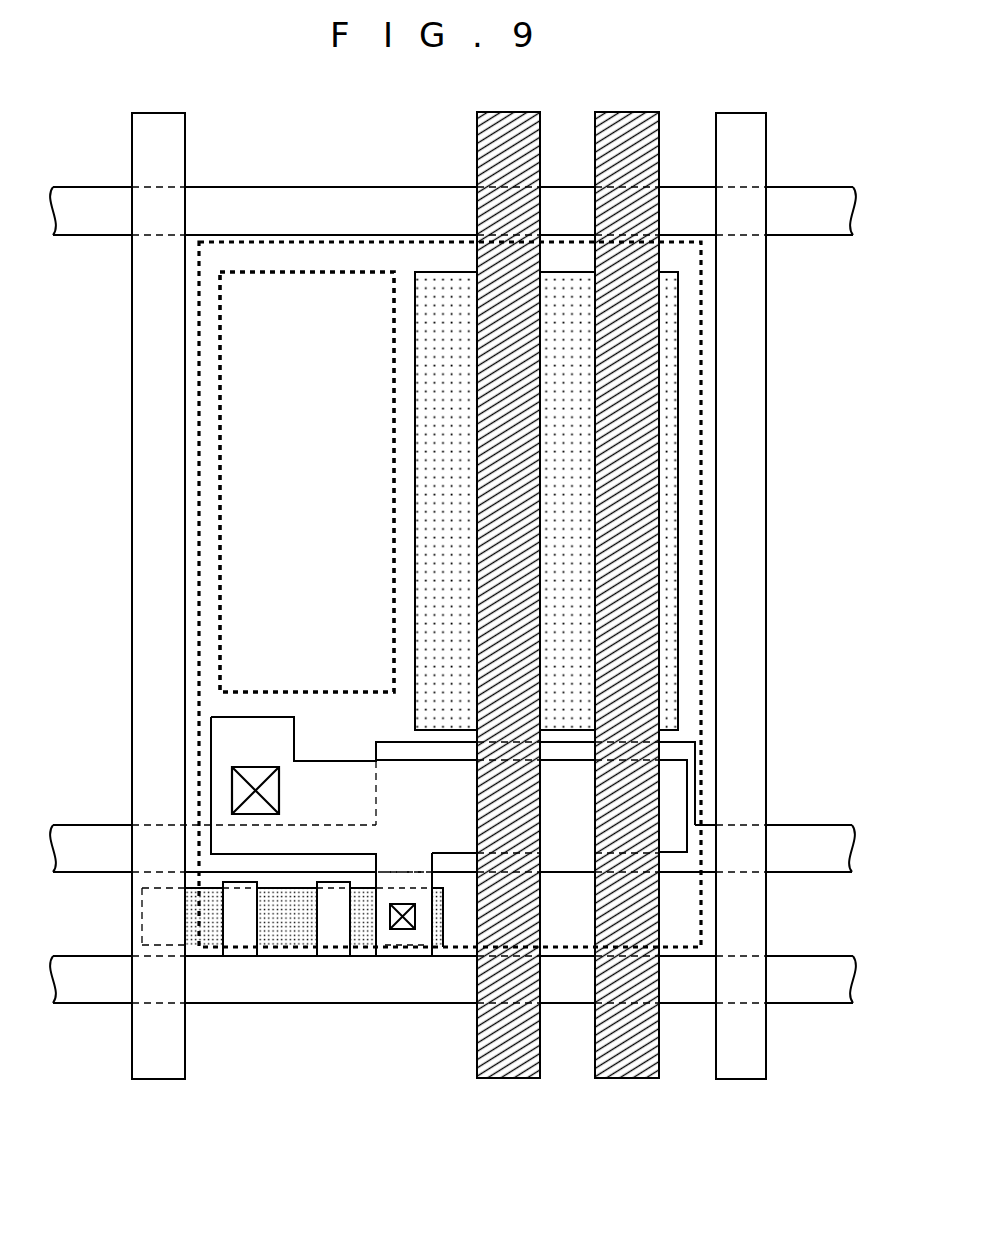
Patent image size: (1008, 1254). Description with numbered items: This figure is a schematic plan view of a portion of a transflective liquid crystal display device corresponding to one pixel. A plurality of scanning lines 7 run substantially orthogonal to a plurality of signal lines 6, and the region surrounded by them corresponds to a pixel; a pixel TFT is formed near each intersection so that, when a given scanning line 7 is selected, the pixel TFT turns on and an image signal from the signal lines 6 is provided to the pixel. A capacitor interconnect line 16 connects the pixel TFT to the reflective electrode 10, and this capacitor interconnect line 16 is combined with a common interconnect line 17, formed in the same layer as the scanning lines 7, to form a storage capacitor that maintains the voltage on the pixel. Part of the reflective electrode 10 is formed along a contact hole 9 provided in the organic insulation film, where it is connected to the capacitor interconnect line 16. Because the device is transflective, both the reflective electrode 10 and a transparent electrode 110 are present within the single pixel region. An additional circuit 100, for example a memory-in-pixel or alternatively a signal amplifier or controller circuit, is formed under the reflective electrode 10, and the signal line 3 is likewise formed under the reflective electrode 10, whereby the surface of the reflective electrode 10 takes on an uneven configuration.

The signal line 3 is at (512, 1063).
The signal line 6 is at (162, 1063).
The scanning line 7 is at (813, 213).
The contact hole 9 is at (240, 793).
The reflective electrode 10 is at (197, 655).
The capacitor interconnect line 16 is at (230, 745).
The common interconnect line 17 is at (815, 858).
The additional circuit 100 is at (667, 509).
The transparent electrode 110 is at (240, 530).